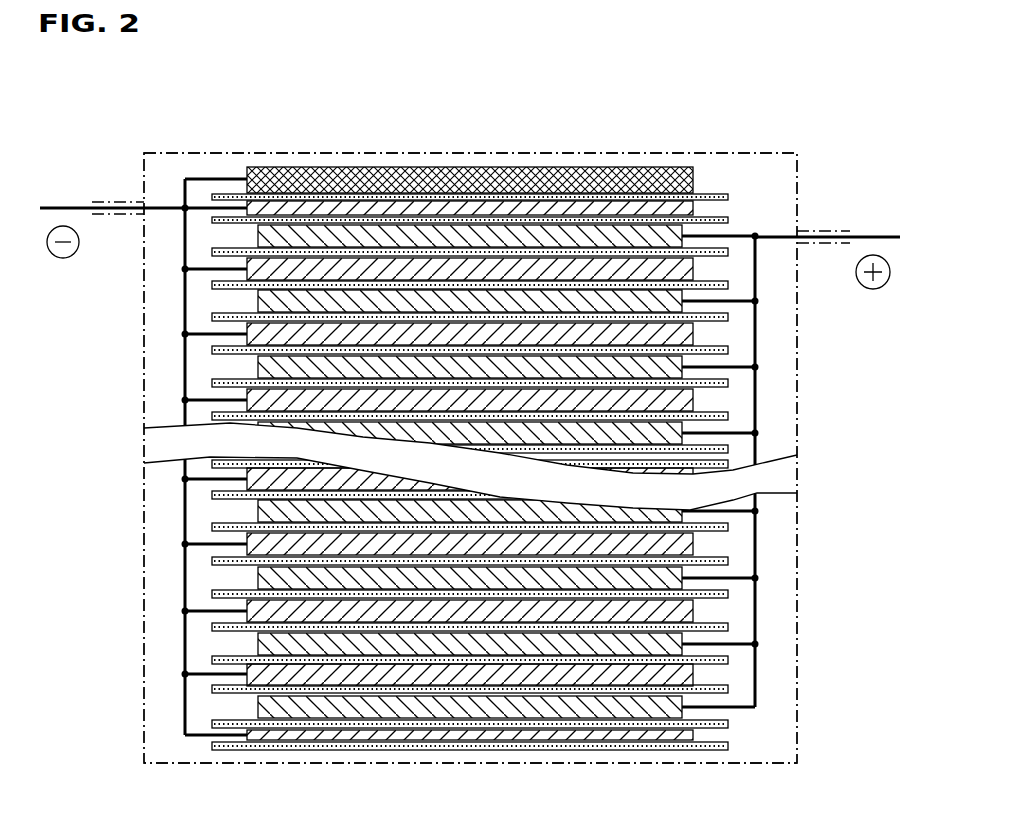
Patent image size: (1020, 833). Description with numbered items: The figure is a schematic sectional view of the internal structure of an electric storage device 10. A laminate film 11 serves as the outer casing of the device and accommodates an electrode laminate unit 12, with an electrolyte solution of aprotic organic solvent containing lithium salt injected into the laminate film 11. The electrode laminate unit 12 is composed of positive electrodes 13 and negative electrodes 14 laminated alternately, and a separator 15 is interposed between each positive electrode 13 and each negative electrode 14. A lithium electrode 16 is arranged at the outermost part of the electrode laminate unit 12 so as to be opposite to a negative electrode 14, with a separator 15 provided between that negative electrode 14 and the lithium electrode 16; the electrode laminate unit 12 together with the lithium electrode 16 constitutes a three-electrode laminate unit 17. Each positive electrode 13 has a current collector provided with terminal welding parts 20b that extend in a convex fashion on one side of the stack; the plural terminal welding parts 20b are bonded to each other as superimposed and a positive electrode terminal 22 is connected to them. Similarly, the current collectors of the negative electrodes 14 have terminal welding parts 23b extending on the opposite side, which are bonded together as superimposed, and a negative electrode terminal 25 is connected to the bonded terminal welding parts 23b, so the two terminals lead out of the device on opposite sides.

The electric storage device 10 is at (612, 105).
The laminate film 11 is at (691, 153).
The electrode laminate unit 12 is at (733, 463).
The positive electrode 13 is at (270, 233).
The negative electrode 14 is at (449, 208).
The separator 15 is at (417, 199).
The lithium electrode 16 is at (362, 167).
The three-electrode laminate unit 17 is at (523, 430).
The terminal welding part 20b is at (742, 236).
The positive electrode terminal 22 is at (871, 235).
The terminal welding part 23b is at (198, 179).
The negative electrode terminal 25 is at (66, 206).